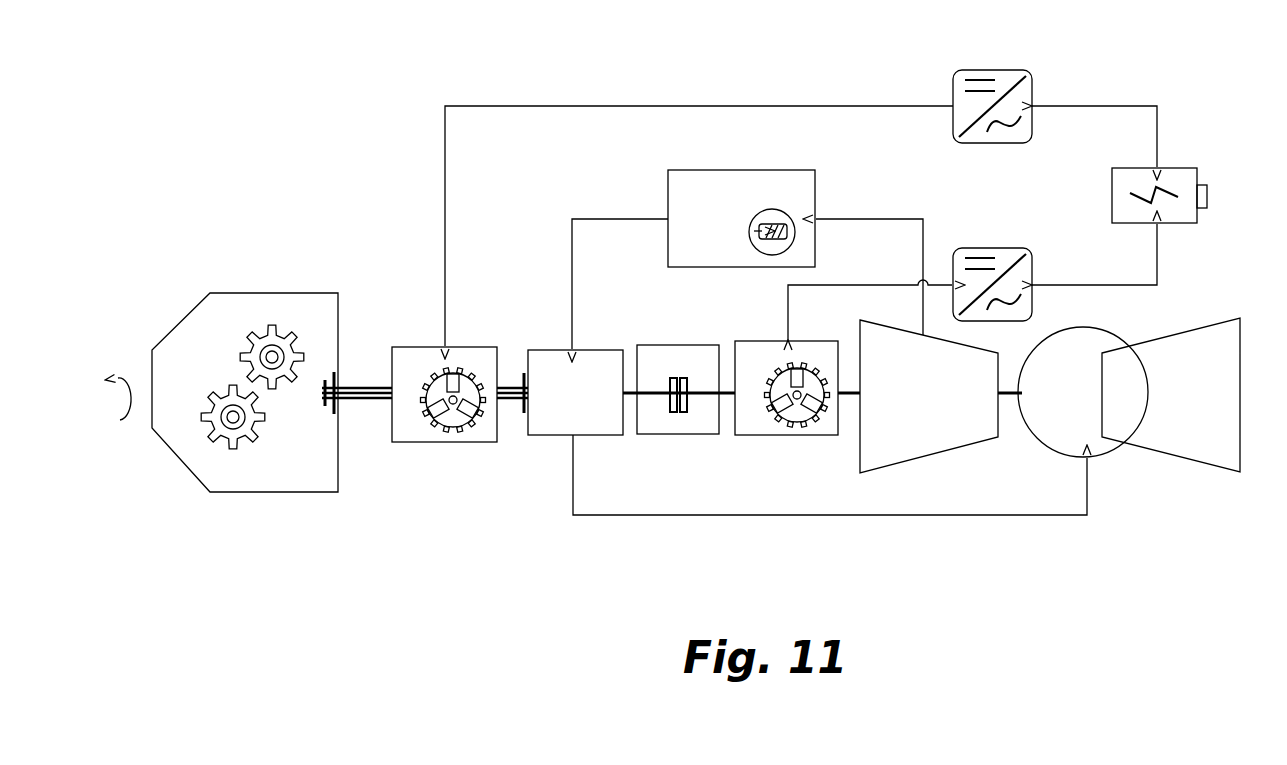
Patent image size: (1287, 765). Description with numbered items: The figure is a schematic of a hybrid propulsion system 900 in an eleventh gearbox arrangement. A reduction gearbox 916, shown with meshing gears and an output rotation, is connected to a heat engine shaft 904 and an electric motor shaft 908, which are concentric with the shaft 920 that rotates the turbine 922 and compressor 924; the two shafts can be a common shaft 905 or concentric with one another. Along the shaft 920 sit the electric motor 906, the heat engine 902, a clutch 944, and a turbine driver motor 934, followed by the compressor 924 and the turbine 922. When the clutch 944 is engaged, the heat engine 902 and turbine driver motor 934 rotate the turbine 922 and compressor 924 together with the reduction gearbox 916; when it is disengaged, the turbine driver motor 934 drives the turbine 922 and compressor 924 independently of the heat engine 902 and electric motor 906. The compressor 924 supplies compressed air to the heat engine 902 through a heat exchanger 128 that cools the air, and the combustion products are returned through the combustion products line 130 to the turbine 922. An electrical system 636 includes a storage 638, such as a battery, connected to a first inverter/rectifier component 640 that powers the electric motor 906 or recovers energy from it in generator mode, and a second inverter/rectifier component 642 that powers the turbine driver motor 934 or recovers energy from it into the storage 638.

The system 900 is at (217, 102).
The reduction gearbox 916 is at (282, 293).
The shaft 920 is at (672, 395).
The electric motor shaft 908 is at (367, 403).
The heat engine shaft 904 is at (515, 408).
The common shaft 905 is at (441, 454).
The electric motor 906 is at (425, 443).
The heat engine 902 is at (598, 440).
The clutch 944 is at (675, 437).
The turbine driver motor 934 is at (764, 437).
The compressor 924 is at (942, 452).
The turbine 922 is at (1165, 455).
The combustion products line 130 is at (749, 516).
The heat exchanger 128 is at (817, 193).
The first inverter/rectifier component 640 is at (1033, 90).
The second inverter/rectifier component 642 is at (1033, 275).
The storage 638 is at (1200, 178).
The electrical system 636 is at (1154, 89).